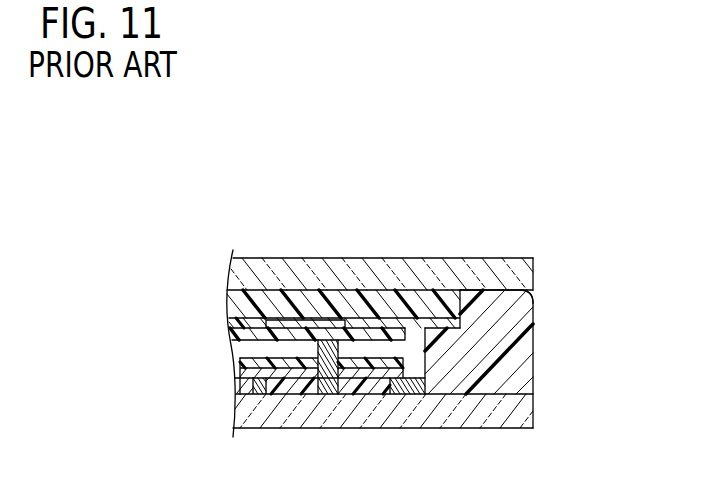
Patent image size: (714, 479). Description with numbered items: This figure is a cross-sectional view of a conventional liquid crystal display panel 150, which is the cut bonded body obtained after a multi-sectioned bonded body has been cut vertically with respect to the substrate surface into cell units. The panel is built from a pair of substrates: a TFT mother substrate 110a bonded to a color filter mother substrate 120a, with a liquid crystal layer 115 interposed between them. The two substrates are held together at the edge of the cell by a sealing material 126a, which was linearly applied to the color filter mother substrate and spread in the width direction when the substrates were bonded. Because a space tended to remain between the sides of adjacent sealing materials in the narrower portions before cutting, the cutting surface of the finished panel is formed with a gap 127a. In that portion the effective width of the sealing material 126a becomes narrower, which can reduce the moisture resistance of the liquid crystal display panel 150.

The liquid crystal display panel 150 is at (248, 220).
The TFT mother substrate 110a is at (223, 258).
The liquid crystal layer 115 is at (223, 332).
The color filter mother substrate 120a is at (223, 360).
The sealing material 126a is at (517, 363).
The gap 127a is at (532, 298).